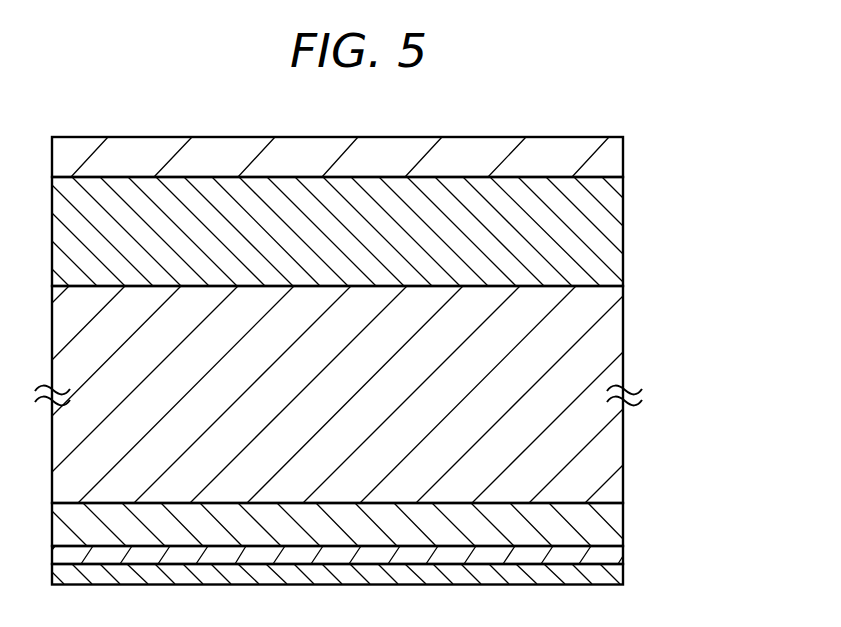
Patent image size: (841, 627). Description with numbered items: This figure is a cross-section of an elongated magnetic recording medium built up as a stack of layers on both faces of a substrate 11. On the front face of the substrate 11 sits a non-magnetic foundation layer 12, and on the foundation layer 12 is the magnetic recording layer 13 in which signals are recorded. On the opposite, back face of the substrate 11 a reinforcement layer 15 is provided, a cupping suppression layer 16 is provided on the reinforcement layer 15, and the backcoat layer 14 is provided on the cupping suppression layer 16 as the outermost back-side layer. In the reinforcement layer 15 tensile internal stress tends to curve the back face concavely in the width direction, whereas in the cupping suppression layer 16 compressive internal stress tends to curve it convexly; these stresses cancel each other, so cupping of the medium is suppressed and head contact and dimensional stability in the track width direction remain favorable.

The substrate 11 is at (617, 332).
The foundation layer 12 is at (615, 238).
The recording layer 13 is at (613, 163).
The backcoat layer 14 is at (615, 570).
The reinforcement layer 15 is at (615, 522).
The cupping suppression layer 16 is at (615, 557).